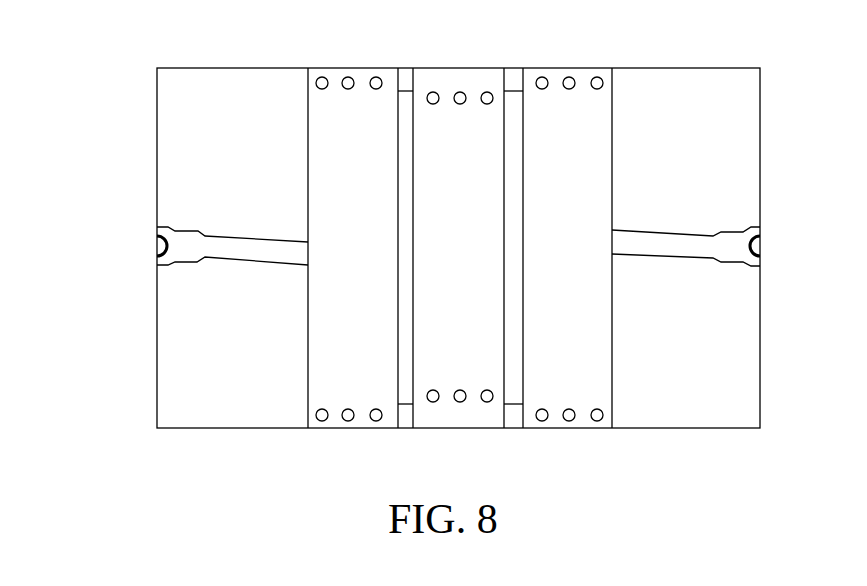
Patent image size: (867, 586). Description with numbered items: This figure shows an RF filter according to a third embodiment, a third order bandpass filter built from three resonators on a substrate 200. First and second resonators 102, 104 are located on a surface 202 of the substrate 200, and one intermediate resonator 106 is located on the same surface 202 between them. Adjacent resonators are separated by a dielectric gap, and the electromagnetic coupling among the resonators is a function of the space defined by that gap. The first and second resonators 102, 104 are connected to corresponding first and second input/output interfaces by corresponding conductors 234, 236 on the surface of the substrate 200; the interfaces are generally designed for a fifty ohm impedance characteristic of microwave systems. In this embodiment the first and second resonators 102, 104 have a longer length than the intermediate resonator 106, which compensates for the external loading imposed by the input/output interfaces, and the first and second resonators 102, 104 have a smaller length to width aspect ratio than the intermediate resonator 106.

The substrate 200 is at (132, 105).
The surface of the substrate 202 is at (203, 185).
The first resonator 102 is at (373, 123).
The second resonator 104 is at (594, 125).
The intermediate resonator 106 is at (477, 125).
The conductor 234 is at (240, 262).
The conductor 236 is at (663, 256).